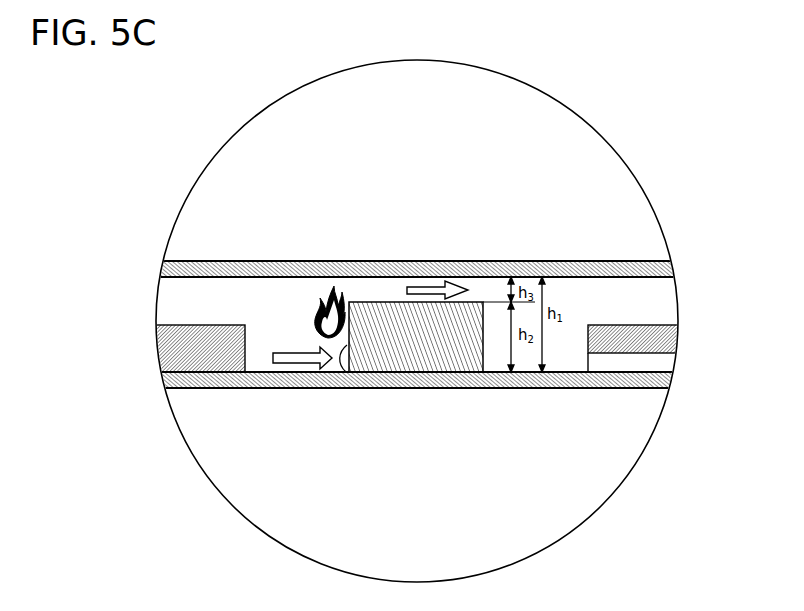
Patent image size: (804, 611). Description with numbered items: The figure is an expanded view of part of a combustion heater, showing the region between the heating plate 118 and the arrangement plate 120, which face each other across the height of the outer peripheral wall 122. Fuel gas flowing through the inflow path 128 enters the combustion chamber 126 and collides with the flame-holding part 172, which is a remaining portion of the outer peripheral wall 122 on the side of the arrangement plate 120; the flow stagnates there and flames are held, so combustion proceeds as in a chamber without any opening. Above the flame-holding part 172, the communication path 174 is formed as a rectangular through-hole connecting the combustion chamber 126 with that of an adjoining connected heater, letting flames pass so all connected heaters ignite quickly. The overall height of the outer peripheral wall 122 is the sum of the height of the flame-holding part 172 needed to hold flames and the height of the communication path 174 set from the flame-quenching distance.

The heating plate 118 is at (233, 262).
The arrangement plate 120 is at (244, 389).
The outer peripheral wall 122 is at (420, 341).
The combustion chamber 126 is at (286, 326).
The inflow path 128 is at (623, 363).
The flame-holding part 172 is at (345, 389).
The communication path 174 is at (399, 296).